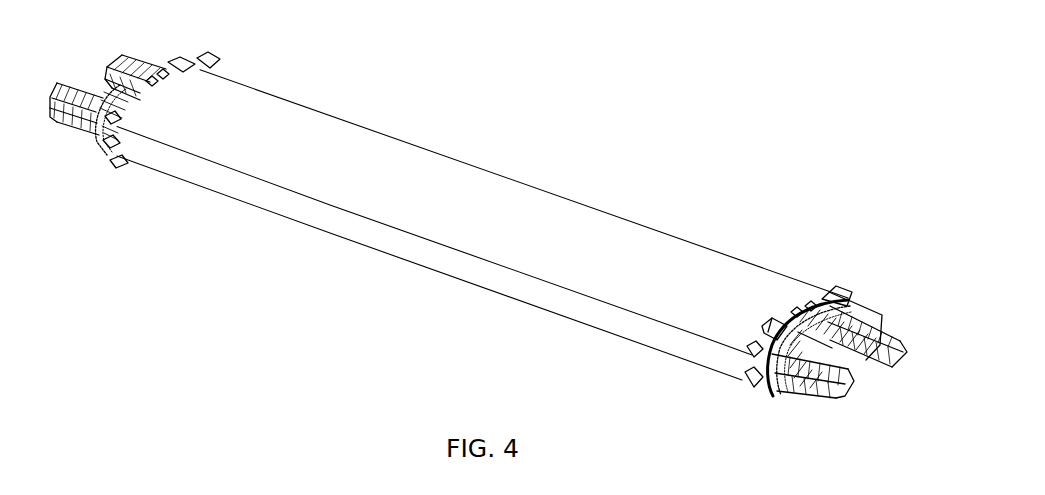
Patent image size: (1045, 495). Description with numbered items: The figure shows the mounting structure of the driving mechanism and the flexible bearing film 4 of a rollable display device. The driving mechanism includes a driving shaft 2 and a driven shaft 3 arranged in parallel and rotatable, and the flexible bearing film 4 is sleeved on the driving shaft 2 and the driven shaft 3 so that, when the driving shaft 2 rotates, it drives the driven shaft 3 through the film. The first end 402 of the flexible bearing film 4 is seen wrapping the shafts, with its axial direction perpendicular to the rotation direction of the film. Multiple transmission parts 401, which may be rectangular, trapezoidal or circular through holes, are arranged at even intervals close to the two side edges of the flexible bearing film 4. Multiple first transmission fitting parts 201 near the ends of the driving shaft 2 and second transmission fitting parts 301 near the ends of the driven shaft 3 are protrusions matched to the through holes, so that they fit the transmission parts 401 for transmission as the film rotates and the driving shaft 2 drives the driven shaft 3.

The flexible bearing film 4 is at (730, 278).
The first end of flexible bearing film 402 is at (637, 313).
The first transmission fitting part 201 is at (777, 317).
The transmission part 401 is at (802, 308).
The second transmission fitting part 301 is at (837, 286).
The driving shaft 2 is at (820, 365).
The driven shaft 3 is at (893, 327).